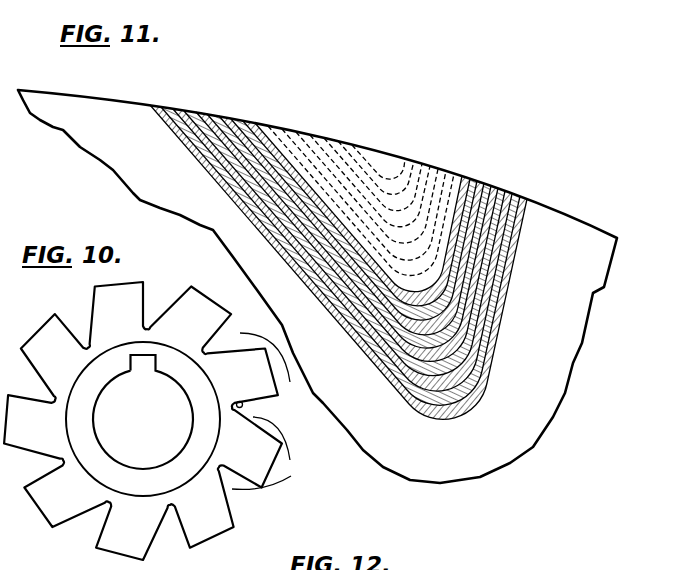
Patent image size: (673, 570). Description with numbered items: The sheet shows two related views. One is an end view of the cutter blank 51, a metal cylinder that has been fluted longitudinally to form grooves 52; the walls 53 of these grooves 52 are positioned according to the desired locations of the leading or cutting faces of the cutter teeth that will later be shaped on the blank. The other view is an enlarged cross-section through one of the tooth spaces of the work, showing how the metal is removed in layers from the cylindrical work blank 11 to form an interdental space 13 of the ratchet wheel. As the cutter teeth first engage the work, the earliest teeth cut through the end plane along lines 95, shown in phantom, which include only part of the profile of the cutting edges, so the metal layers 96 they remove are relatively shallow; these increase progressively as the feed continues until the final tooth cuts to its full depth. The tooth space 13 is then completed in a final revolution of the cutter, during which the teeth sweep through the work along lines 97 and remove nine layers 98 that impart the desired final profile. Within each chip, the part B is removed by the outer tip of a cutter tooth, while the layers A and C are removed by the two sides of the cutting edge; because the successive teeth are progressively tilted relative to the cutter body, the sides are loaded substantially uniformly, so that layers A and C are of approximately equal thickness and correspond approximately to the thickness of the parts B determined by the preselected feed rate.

In FIG. 11, the work blank 11 is at (120, 110).
In FIG. 11, the interdental space 13 is at (345, 333).
In FIG. 11, the lines 95 is at (380, 167).
In FIG. 11, the metal layers 96 is at (440, 172).
In FIG. 11, the lines 97 is at (472, 395).
In FIG. 11, the layers 98 is at (498, 328).
In FIG. 11, the layer A is at (384, 378).
In FIG. 11, the part of chip B is at (452, 398).
In FIG. 11, the layer C is at (500, 281).
In FIG. 10, the cutter blank 51 is at (199, 311).
In FIG. 10, the grooves 52 is at (271, 411).
In FIG. 10, the walls 53 is at (218, 332).